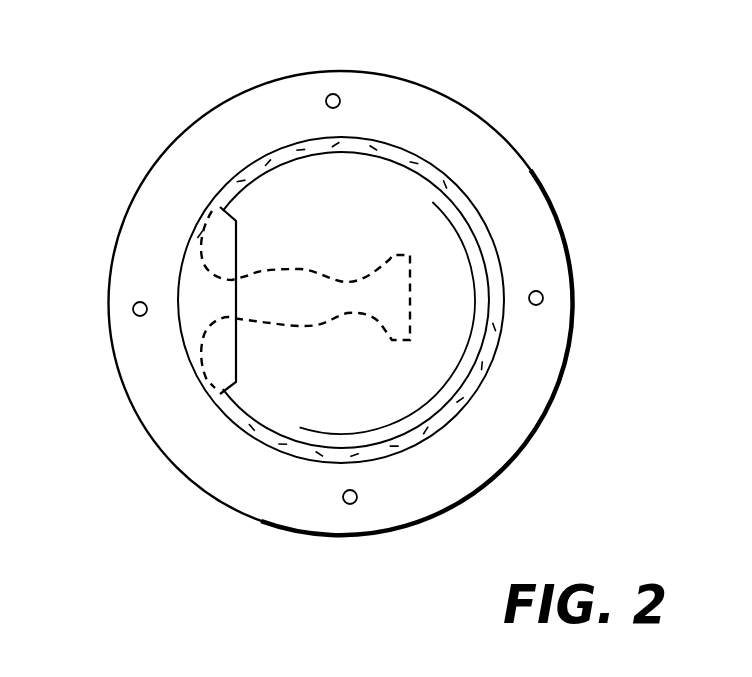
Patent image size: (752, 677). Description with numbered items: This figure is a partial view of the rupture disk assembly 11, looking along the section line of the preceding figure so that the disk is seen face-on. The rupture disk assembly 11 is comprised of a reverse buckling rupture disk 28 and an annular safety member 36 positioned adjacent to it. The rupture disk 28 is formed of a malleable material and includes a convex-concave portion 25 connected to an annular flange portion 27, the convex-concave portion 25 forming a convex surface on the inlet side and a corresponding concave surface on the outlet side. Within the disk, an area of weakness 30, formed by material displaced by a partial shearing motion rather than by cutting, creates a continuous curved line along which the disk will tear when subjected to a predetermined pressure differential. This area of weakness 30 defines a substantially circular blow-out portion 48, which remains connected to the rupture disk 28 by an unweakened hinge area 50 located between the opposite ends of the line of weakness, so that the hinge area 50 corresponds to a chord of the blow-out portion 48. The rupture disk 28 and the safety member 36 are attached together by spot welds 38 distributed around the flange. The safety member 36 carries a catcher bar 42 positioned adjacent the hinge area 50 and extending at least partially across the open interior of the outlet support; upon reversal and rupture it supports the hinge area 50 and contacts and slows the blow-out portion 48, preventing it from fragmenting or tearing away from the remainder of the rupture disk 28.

The rupture disk assembly 11 is at (508, 120).
The convex-concave portion 25 is at (430, 345).
The annular flange portion 27 is at (537, 233).
The rupture disk 28 is at (510, 187).
The area of weakness 30 is at (247, 183).
The safety member 36 is at (204, 299).
The spot welds 38 is at (326, 101).
The catcher bar 42 is at (293, 303).
The blow-out portion 48 is at (391, 224).
The hinge area 50 is at (236, 302).